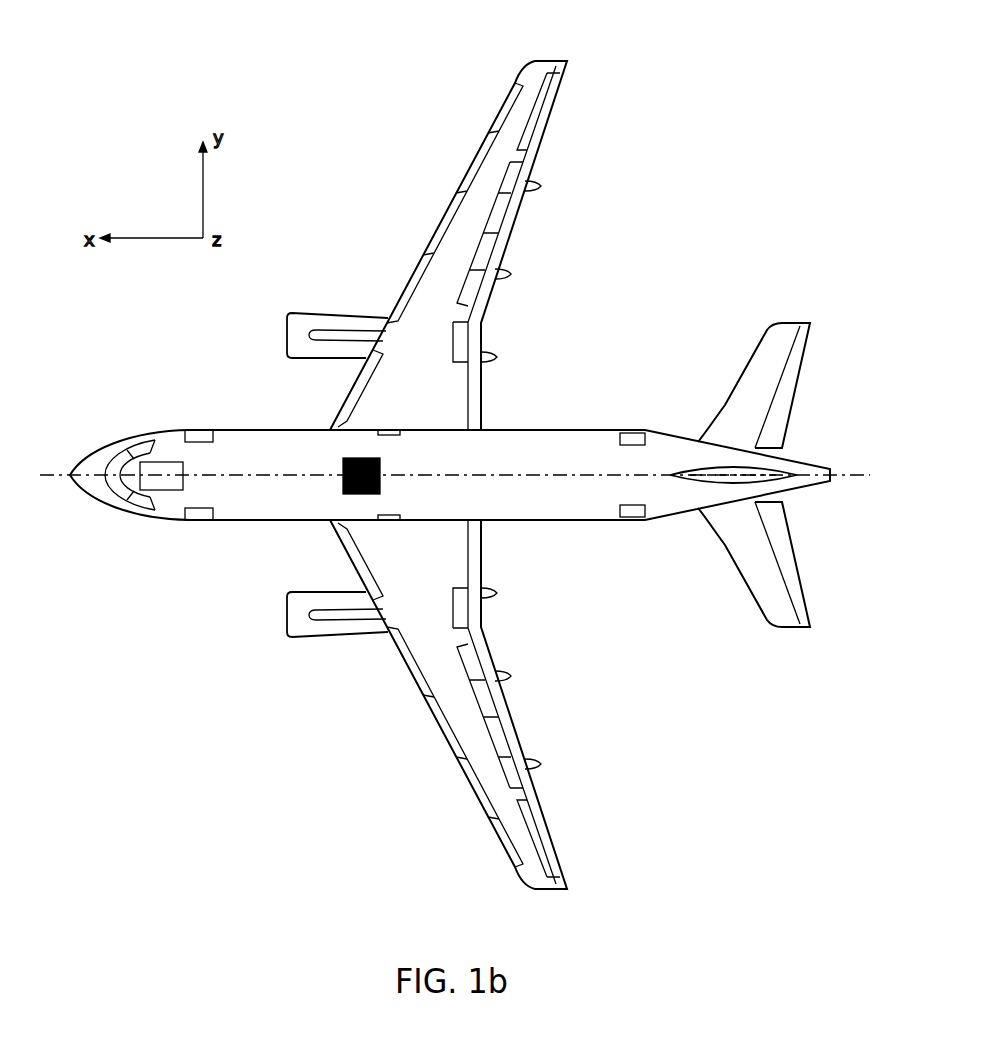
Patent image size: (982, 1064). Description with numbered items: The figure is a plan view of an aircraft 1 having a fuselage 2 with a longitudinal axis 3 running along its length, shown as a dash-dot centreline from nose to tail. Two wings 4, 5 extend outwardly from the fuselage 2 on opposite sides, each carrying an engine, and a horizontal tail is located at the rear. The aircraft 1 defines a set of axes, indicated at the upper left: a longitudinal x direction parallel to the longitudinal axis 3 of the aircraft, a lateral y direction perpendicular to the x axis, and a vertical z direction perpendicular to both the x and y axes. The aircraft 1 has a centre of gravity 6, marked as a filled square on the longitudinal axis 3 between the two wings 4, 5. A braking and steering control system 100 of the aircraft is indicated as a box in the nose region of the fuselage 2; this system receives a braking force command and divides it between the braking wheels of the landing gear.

The aircraft 1 is at (632, 267).
The fuselage 2 is at (207, 492).
The longitudinal axis 3 is at (513, 476).
The wing 4 is at (513, 818).
The wing 5 is at (495, 167).
The centre of gravity 6 is at (342, 483).
The braking and steering control system 100 is at (155, 472).